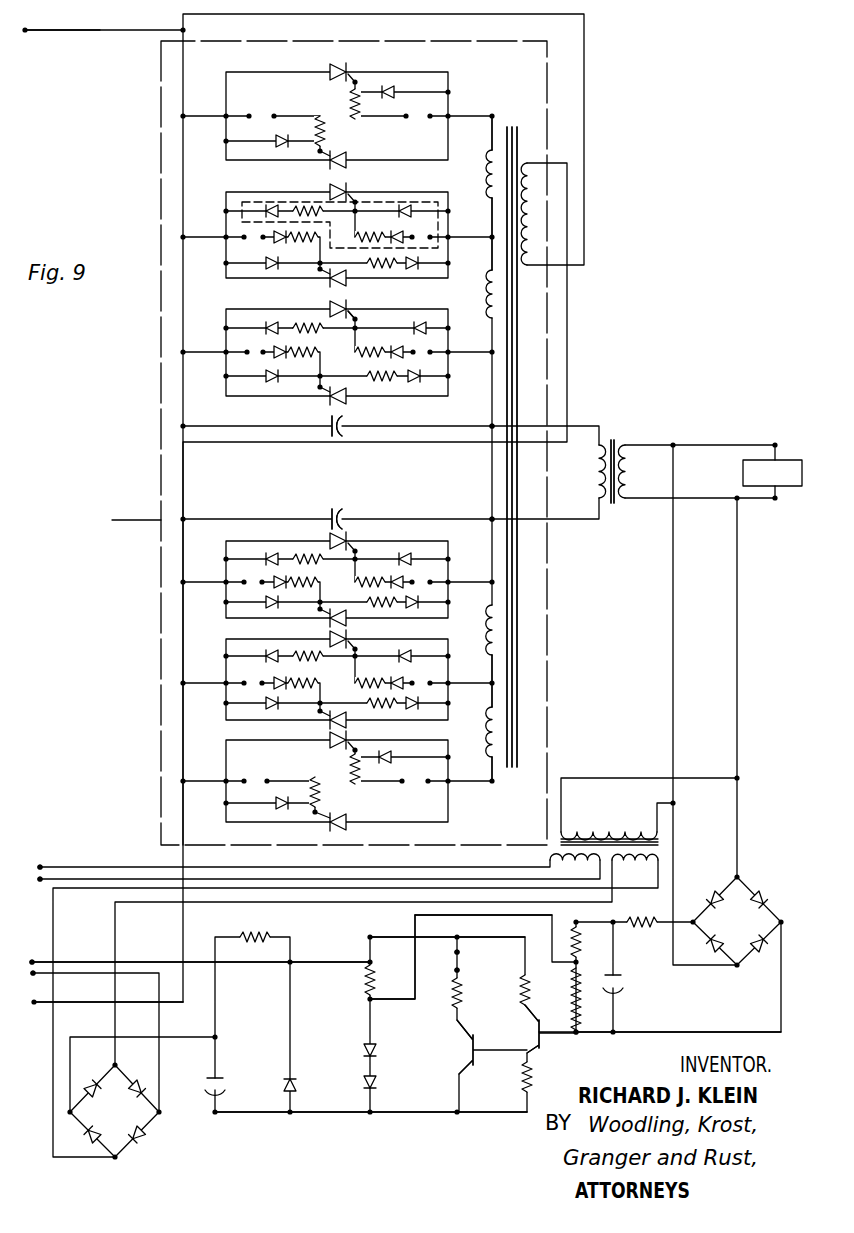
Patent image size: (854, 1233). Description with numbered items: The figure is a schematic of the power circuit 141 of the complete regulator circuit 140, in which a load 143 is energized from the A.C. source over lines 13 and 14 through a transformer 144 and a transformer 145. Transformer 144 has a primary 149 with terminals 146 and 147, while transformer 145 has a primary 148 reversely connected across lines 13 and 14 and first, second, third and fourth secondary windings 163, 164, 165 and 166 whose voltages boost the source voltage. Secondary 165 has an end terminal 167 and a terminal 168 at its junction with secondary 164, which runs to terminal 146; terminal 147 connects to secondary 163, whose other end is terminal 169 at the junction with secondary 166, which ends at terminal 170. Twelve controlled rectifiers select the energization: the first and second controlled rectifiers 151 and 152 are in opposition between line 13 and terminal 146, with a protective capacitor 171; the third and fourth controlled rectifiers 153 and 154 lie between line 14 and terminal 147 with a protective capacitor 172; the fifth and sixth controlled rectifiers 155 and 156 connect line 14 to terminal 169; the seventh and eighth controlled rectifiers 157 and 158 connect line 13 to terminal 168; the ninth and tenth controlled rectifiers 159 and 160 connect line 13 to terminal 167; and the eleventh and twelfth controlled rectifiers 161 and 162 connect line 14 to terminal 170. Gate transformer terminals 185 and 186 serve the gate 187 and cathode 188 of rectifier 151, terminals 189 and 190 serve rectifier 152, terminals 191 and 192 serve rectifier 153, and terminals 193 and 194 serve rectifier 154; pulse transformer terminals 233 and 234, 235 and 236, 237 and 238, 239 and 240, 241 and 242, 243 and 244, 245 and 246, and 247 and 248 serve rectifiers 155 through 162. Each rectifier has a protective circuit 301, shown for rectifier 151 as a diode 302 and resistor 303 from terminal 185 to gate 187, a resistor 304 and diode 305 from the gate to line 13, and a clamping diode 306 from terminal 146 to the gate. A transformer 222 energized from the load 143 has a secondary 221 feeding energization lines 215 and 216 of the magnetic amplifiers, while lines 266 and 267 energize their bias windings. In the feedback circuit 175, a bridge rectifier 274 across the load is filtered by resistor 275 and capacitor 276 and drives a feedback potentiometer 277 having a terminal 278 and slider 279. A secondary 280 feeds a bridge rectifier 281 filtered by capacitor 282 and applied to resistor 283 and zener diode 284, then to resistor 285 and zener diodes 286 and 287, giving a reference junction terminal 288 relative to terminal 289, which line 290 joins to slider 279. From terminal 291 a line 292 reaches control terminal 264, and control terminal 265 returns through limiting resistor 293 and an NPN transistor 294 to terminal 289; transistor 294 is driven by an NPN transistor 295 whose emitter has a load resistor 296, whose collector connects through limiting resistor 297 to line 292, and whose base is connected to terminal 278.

The line 13 is at (40, 30).
The line 14 is at (34, 1002).
The regulator circuit 140 is at (311, 443).
The power circuit 141 is at (161, 520).
The load 143 is at (793, 486).
The transformer 144 is at (612, 440).
The transformer 145 is at (509, 125).
The terminal 146 is at (492, 428).
The terminal 147 is at (492, 517).
The primary 148 is at (530, 178).
The primary 149 is at (599, 470).
The first controlled rectifier 151 is at (332, 304).
The second controlled rectifier 152 is at (330, 400).
The third controlled rectifier 153 is at (346, 622).
The fourth controlled rectifier 154 is at (330, 536).
The fifth controlled rectifier 155 is at (346, 724).
The sixth controlled rectifier 156 is at (330, 634).
The seventh controlled rectifier 157 is at (346, 188).
The eighth controlled rectifier 158 is at (330, 282).
The ninth controlled rectifier 159 is at (346, 68).
The tenth controlled rectifier 160 is at (330, 164).
The eleventh controlled rectifier 161 is at (346, 818).
The twelfth controlled rectifier 162 is at (330, 745).
The first secondary winding 163 is at (486, 630).
The second secondary winding 164 is at (486, 290).
The third secondary winding 165 is at (485, 163).
The fourth secondary winding 166 is at (486, 732).
The end terminal 167 is at (492, 117).
The terminal 168 is at (492, 236).
The terminal 169 is at (492, 683).
The terminal 170 is at (492, 783).
The protective capacitor 171 is at (333, 440).
The protective capacitor 172 is at (332, 513).
The feedback circuit 175 is at (678, 1012).
The terminal 185 is at (413, 352).
The terminal 186 is at (430, 352).
The gate 187 is at (355, 319).
The cathode 188 is at (350, 304).
The terminal 189 is at (247, 352).
The terminal 190 is at (263, 352).
The terminal 191 is at (262, 582).
The terminal 192 is at (244, 582).
The terminal 193 is at (430, 582).
The terminal 194 is at (424, 578).
The energization line 215 is at (75, 879).
The energization line 216 is at (40, 867).
The secondary 221 is at (559, 859).
The transformer 222 is at (628, 838).
The terminal 233 is at (262, 683).
The terminal 234 is at (244, 683).
The terminal 235 is at (430, 683).
The terminal 236 is at (424, 677).
The terminal 237 is at (412, 237).
The terminal 238 is at (430, 237).
The terminal 239 is at (244, 237).
The terminal 240 is at (263, 237).
The terminal 241 is at (406, 116).
The terminal 242 is at (430, 116).
The terminal 243 is at (249, 116).
The terminal 244 is at (274, 116).
The terminal 245 is at (267, 781).
The terminal 246 is at (244, 781).
The terminal 247 is at (428, 781).
The terminal 248 is at (408, 777).
The control terminal 264 is at (457, 952).
The control terminal 265 is at (457, 970).
The line 266 is at (33, 973).
The line 267 is at (45, 946).
The bridge rectifier 274 is at (737, 921).
The resistor 275 is at (635, 928).
The capacitor 276 is at (614, 976).
The feedback potentiometer 277 is at (596, 946).
The terminal 278 is at (578, 1034).
The slider 279 is at (560, 999).
The secondary 280 is at (650, 862).
The bridge rectifier 281 is at (114, 1111).
The capacitor 282 is at (218, 1078).
The resistor 283 is at (258, 932).
The zener diode 284 is at (296, 1086).
The resistor 285 is at (349, 981).
The zener diode 286 is at (376, 1052).
The zener diode 287 is at (376, 1084).
The junction terminal 288 is at (392, 957).
The terminal 289 is at (370, 1114).
The line 290 is at (476, 915).
The terminal 291 is at (370, 962).
The line 292 is at (415, 937).
The limiting resistor 293 is at (459, 1002).
The NPN transistor 294 is at (476, 1040).
The NPN transistor 295 is at (530, 1052).
The load resistor 296 is at (530, 1072).
The limiting resistor 297 is at (528, 1004).
The protective circuit 301 is at (315, 202).
The diode 302 is at (397, 358).
The resistor 303 is at (365, 356).
The resistor 304 is at (300, 325).
The diode 305 is at (268, 324).
The diode 306 is at (424, 322).